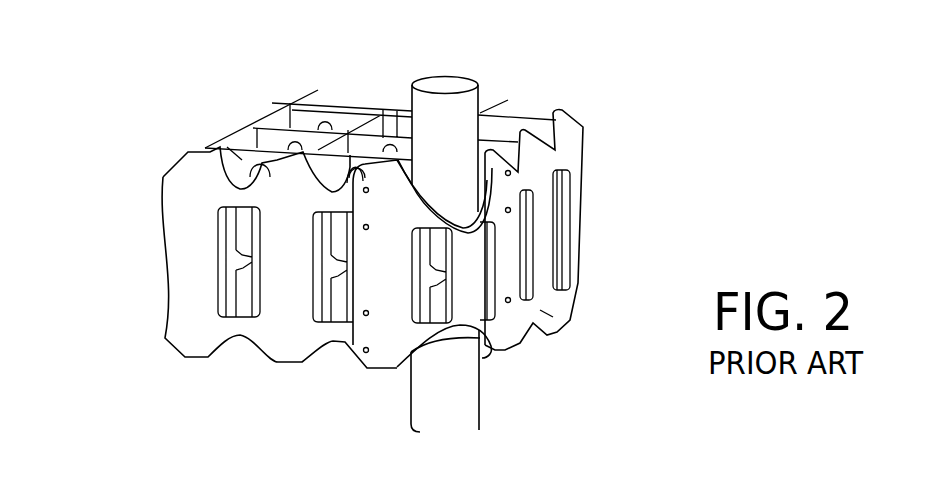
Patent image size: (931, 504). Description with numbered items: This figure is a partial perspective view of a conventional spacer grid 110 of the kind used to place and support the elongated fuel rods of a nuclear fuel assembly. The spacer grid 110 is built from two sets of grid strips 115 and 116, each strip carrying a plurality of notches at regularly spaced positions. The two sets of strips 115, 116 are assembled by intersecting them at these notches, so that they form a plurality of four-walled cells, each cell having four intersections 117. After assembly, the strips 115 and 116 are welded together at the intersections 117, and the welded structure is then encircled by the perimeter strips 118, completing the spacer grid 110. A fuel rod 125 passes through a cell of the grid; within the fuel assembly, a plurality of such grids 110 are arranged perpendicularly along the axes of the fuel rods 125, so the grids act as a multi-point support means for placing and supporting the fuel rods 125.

The spacer grid 110 is at (252, 351).
The grid strips 115 is at (255, 127).
The grid strips 116 is at (293, 103).
The intersections 117 is at (388, 100).
The perimeter strips 118 is at (543, 253).
The fuel rod 125 is at (463, 392).